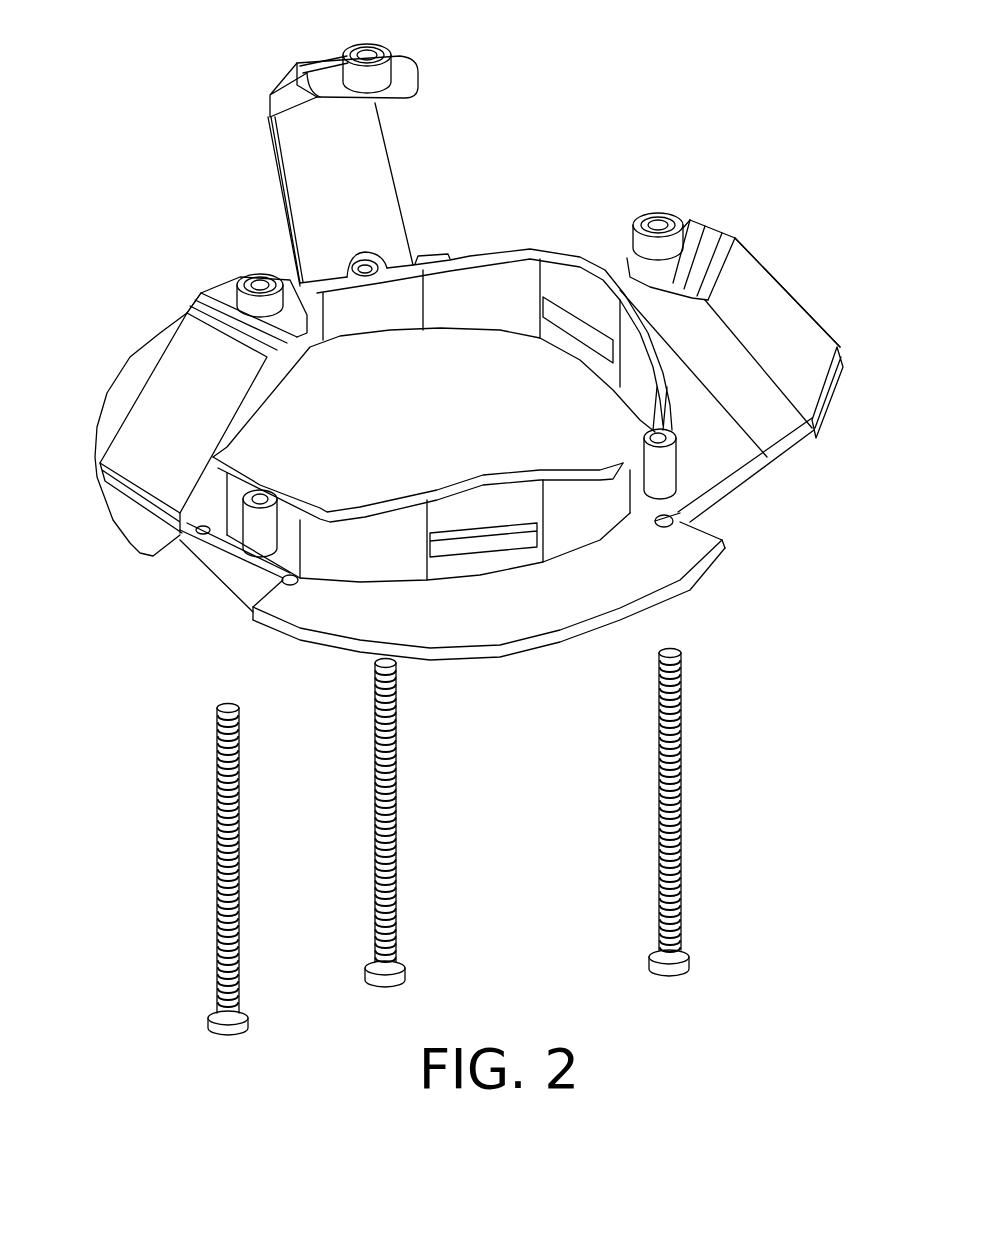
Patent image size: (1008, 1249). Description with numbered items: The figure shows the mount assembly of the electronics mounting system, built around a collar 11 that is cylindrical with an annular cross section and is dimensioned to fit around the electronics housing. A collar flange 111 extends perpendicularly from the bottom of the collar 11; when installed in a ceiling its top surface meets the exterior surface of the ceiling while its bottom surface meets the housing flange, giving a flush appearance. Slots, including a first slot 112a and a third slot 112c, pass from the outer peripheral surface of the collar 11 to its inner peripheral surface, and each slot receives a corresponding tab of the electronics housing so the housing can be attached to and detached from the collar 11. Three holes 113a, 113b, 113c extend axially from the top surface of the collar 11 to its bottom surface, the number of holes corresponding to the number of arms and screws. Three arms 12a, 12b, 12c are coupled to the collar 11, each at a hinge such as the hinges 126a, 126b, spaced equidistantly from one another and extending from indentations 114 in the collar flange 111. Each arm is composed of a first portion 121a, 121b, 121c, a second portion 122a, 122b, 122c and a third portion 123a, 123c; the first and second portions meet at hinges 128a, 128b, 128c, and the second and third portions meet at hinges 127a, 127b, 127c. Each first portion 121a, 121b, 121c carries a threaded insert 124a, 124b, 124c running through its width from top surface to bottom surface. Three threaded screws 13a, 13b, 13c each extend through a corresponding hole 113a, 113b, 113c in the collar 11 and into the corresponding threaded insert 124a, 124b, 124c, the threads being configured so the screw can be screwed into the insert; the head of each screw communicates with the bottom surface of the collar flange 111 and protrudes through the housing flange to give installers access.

The collar 11 is at (624, 80).
The collar flange 111 is at (706, 554).
The indentations 114 is at (166, 562).
The first slot 112a is at (510, 532).
The third slot 112c is at (560, 310).
The hole 113a is at (666, 436).
The hole 113b is at (266, 499).
The hole 113c is at (364, 262).
The arm 12a is at (749, 347).
The arm 12b is at (168, 386).
The arm 12c is at (339, 150).
The first portion 121a is at (690, 224).
The first portion 121b is at (222, 291).
The first portion 121c is at (418, 72).
The second portion 122a is at (770, 279).
The second portion 122b is at (177, 335).
The second portion 122c is at (283, 90).
The third portion 123a is at (769, 465).
The third portion 123c is at (390, 184).
The threaded insert 124a is at (658, 220).
The threaded insert 124b is at (259, 282).
The threaded insert 124c is at (368, 52).
The hinge 126a is at (668, 526).
The hinge 126b is at (263, 580).
The hinge 127a is at (829, 394).
The hinge 127b is at (100, 484).
The hinge 127c is at (270, 118).
The hinge 128a is at (713, 262).
The hinge 128b is at (193, 308).
The hinge 128c is at (318, 56).
The threaded screw 13a is at (679, 736).
The threaded screw 13b is at (217, 813).
The threaded screw 13c is at (374, 764).